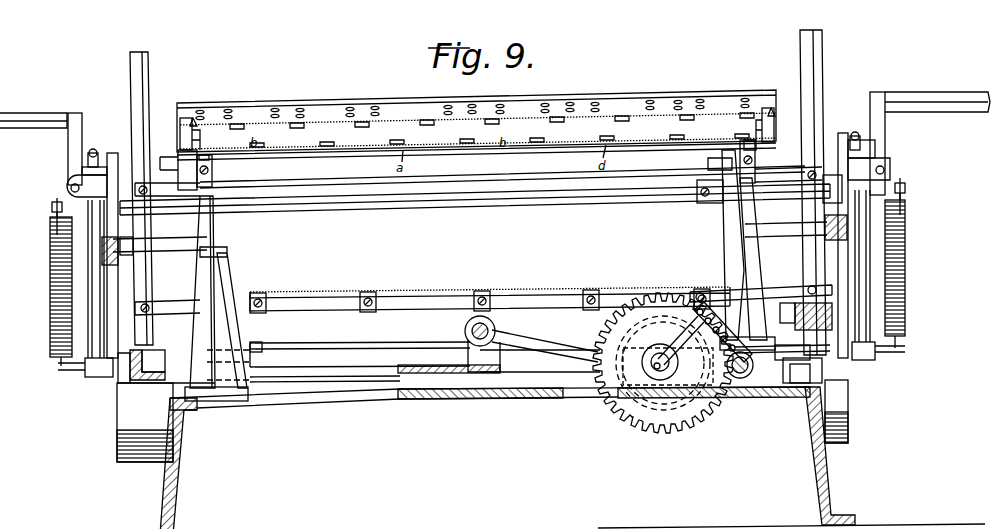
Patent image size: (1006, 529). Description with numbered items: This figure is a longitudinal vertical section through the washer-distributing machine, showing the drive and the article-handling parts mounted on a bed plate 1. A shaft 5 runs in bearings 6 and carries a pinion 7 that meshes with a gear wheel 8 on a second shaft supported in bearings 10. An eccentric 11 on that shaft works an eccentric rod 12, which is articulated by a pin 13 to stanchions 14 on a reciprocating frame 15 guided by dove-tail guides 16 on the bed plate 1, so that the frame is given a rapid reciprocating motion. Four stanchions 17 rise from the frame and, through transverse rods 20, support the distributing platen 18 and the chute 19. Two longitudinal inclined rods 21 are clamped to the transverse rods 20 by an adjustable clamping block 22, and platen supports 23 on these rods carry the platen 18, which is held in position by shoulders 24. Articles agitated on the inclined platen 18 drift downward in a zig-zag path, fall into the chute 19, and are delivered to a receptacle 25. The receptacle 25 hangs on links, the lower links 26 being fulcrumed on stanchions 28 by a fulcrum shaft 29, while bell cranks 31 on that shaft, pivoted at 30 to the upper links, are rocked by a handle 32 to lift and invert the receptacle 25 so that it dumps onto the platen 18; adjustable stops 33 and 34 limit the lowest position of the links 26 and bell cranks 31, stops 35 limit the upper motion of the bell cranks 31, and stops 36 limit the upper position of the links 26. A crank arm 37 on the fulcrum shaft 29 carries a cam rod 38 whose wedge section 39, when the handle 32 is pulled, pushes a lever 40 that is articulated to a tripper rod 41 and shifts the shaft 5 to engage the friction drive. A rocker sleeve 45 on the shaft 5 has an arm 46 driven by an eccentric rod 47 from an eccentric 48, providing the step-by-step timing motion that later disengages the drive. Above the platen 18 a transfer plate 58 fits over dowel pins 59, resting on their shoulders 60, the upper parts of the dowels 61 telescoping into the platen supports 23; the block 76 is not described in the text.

The bed plate 1 is at (433, 400).
The shaft 5 is at (734, 392).
The bearings 6 is at (778, 354).
The pinion 7 is at (764, 395).
The gear wheel 8 is at (630, 416).
The bearings 10 is at (594, 353).
The eccentric 11 is at (612, 327).
The eccentric rod 12 is at (521, 338).
The pin 13 is at (465, 331).
The stanchions 14 is at (468, 356).
The reciprocating frame 15 is at (360, 354).
The dove-tail guides 16 is at (232, 401).
The stanchions 17 is at (130, 60).
The distributing platen 18 is at (324, 150).
The chute 19 is at (317, 292).
The transverse rods 20 is at (470, 240).
The longitudinal inclined rods 21 is at (213, 170).
The clamping block 22 is at (196, 188).
The platen supports 23 is at (186, 165).
The shoulders 24 is at (198, 141).
The receptacle 25 is at (116, 447).
The lower links 26 is at (102, 337).
The stanchions 28 is at (200, 332).
The fulcrum shaft 29 is at (401, 205).
The pivot 30 is at (54, 210).
The bell cranks 31 is at (70, 153).
The handle 32 is at (35, 113).
The adjustable stop 33 is at (51, 268).
The adjustable stop 34 is at (70, 246).
The stops 35 is at (66, 187).
The stops 36 is at (98, 158).
The crank arm 37 is at (710, 172).
The cam rod 38 is at (728, 220).
The wedge section 39 is at (761, 293).
The lever 40 is at (787, 353).
The tripper rod 41 is at (832, 378).
The rocker sleeve 45 is at (752, 338).
The arm 46 is at (696, 308).
The eccentric rod 47 is at (684, 340).
The eccentric 48 is at (664, 386).
The transfer plate 58 is at (357, 104).
The dowel pins 59 is at (193, 118).
The shoulders 60 is at (181, 126).
The upper part of the dowels 61 is at (196, 135).
The stop block 76 is at (262, 346).